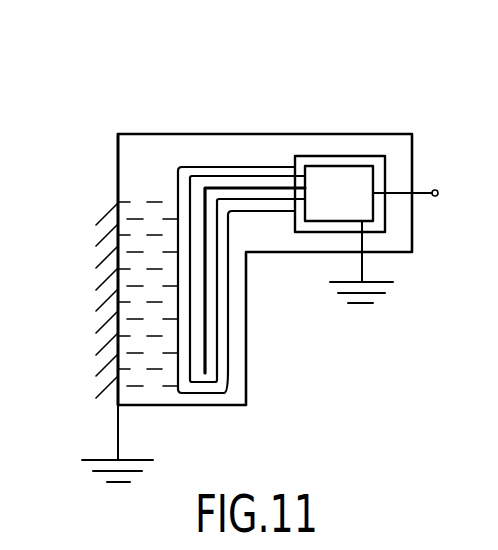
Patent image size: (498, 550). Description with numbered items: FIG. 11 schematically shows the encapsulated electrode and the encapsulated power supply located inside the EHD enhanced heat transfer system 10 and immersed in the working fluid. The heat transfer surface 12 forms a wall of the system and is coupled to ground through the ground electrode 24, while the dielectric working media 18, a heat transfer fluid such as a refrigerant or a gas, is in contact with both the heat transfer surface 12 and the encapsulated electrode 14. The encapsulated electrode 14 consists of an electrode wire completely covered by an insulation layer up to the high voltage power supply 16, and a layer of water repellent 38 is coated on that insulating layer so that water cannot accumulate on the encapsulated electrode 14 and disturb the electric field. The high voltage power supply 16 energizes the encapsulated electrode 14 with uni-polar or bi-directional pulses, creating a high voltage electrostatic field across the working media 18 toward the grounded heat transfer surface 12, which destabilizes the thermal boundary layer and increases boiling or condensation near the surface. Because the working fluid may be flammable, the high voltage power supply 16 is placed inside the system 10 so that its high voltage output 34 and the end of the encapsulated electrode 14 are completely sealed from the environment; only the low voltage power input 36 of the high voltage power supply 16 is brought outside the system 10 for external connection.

The heat transfer system 10 is at (219, 92).
The heat transfer surface 12 is at (120, 206).
The encapsulated electrode 14 is at (218, 256).
The high voltage power supply 16 is at (350, 188).
The dielectric working media 18 is at (175, 393).
The ground electrode 24 is at (118, 438).
The high voltage output 34 is at (305, 189).
The low voltage power input 36 is at (438, 196).
The layer of water repellent 38 is at (278, 166).